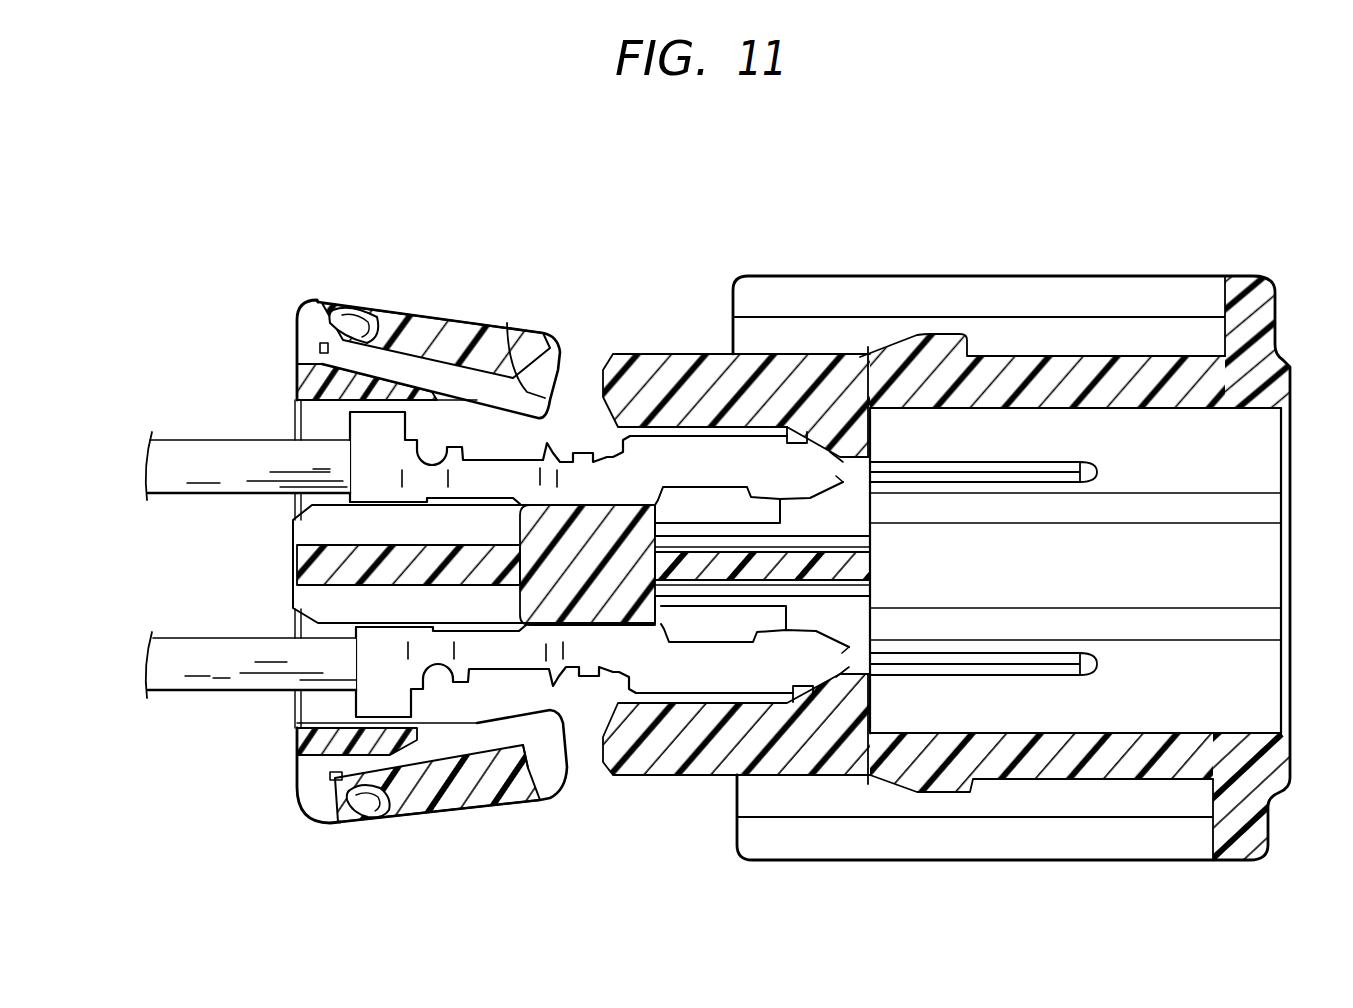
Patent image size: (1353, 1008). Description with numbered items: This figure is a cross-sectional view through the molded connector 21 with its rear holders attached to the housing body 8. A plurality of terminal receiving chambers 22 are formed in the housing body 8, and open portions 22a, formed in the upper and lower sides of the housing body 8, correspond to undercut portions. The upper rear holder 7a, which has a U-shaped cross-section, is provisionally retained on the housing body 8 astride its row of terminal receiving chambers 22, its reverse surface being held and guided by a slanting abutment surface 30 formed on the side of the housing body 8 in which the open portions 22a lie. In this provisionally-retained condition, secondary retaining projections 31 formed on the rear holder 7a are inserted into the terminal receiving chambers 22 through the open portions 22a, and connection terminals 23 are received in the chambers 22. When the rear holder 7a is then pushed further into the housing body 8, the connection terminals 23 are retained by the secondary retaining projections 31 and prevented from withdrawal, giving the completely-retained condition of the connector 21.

The molded connector 21 is at (977, 249).
The terminal receiving chamber 22 is at (477, 430).
The open portion 22a is at (582, 385).
The connection terminal 23 is at (680, 457).
The secondary retaining projection 31 is at (522, 402).
The slanting abutment surface 30 is at (382, 307).
The upper rear holder 7a is at (394, 304).
The housing body 8 is at (1283, 819).